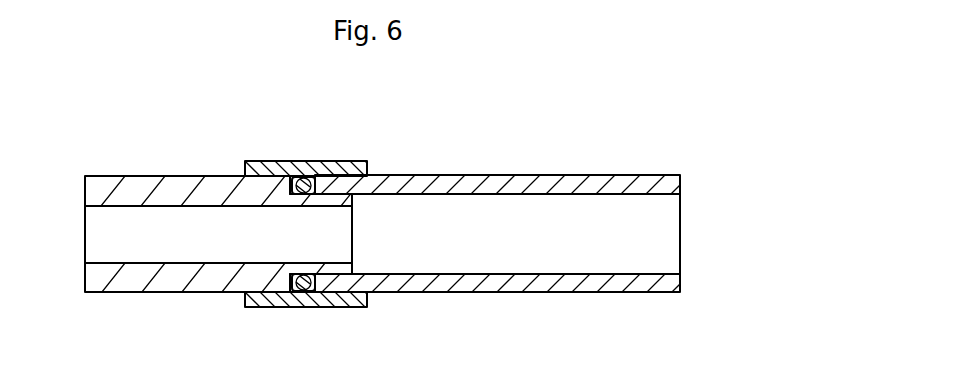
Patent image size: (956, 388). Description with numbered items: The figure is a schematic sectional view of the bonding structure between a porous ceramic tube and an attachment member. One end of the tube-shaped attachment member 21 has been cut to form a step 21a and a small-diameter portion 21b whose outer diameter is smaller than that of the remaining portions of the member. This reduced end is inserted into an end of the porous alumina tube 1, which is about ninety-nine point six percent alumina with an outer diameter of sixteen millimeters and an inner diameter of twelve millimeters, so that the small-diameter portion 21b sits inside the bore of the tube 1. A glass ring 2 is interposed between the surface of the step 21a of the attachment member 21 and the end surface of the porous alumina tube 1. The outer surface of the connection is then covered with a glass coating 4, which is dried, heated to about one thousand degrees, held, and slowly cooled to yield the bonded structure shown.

The porous alumina tube 1 is at (505, 283).
The glass ring 2 is at (305, 298).
The glass coating 4 is at (268, 160).
The attachment member 21 is at (162, 273).
The step 21a is at (290, 190).
The small-diameter portion 21b is at (340, 258).